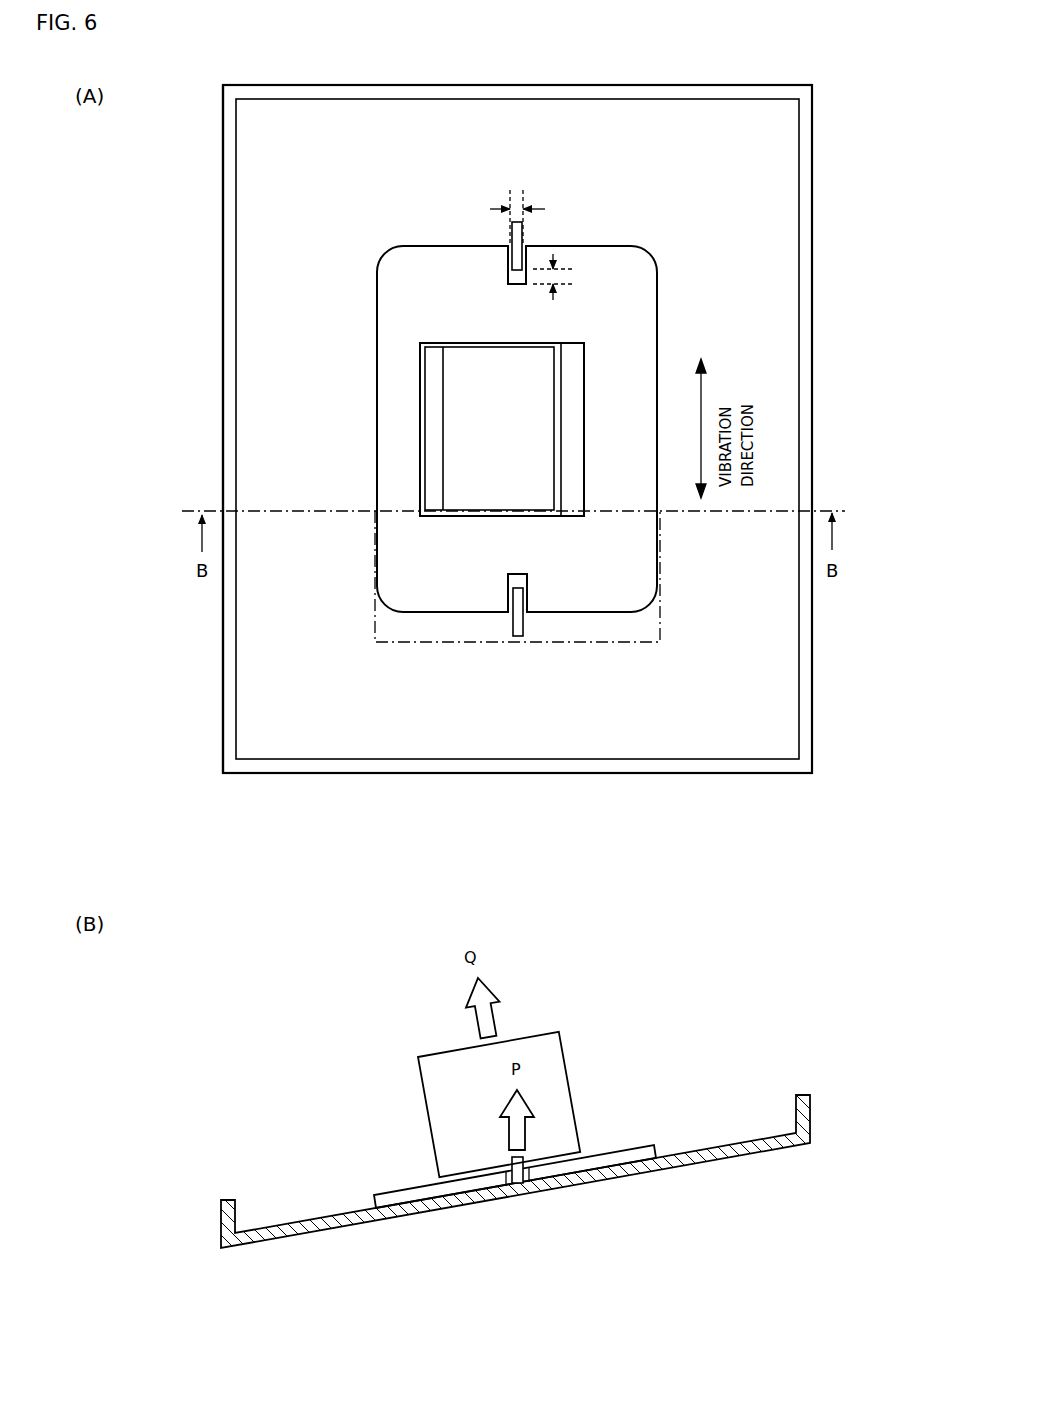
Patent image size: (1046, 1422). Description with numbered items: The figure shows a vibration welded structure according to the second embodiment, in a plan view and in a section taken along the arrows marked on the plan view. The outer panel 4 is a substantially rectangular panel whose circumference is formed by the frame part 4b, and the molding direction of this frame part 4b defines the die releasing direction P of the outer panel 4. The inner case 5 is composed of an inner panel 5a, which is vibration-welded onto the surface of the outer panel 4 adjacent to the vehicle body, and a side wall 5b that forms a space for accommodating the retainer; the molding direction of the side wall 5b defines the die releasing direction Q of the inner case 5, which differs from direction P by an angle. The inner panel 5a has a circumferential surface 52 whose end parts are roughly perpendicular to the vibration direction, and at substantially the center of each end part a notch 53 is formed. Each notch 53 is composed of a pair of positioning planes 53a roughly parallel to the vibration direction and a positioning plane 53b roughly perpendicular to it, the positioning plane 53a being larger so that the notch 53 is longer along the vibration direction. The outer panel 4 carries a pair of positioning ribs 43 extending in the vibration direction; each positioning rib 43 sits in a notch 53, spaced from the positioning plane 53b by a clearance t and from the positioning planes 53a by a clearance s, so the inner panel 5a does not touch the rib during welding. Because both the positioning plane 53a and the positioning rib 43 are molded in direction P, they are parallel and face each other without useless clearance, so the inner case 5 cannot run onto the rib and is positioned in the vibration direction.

The outer panel 4 is at (276, 650).
The frame part 4b is at (222, 202).
The inner case 5 is at (434, 742).
The inner panel 5a is at (396, 420).
The side wall 5b is at (580, 390).
The positioning rib 43 is at (522, 232).
The circumferential surface 52 is at (450, 245).
The notch 53 is at (527, 298).
The positioning plane 53a is at (521, 266).
The positioning plane 53b is at (517, 285).